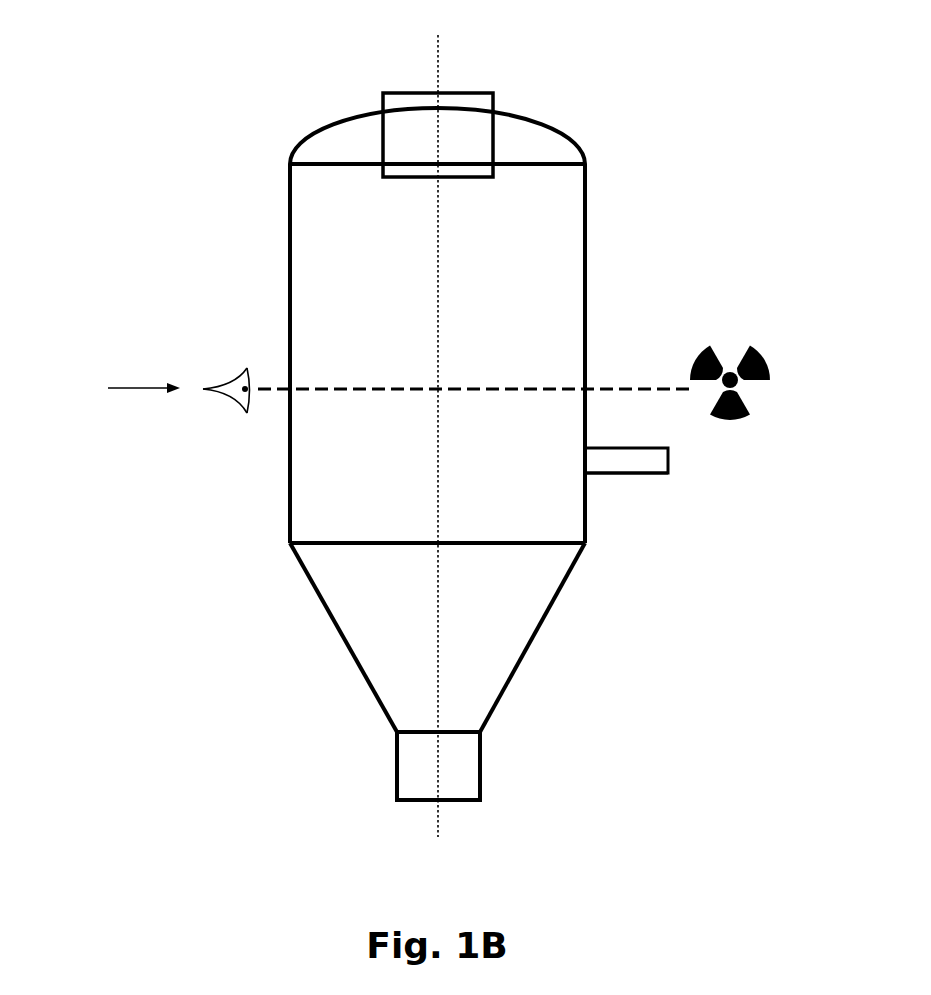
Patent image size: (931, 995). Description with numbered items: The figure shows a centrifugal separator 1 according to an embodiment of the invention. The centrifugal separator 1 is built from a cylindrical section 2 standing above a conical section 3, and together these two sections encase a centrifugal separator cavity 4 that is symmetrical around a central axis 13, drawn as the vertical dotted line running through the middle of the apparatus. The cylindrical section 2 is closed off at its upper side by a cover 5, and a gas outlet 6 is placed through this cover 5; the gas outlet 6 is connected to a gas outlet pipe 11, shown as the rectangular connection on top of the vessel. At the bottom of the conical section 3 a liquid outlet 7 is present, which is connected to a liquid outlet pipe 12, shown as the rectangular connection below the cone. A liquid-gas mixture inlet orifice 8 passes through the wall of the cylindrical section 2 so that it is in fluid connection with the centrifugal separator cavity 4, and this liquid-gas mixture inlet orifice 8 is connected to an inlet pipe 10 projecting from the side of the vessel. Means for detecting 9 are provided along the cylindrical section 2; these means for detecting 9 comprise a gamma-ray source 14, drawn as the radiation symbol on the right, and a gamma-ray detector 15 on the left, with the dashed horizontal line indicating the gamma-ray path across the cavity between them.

The centrifugal separator 1 is at (234, 144).
The cylindrical section 2 is at (290, 328).
The conical section 3 is at (318, 597).
The centrifugal separator cavity 4 is at (553, 270).
The cover 5 is at (342, 110).
The gas outlet 6 is at (397, 177).
The liquid outlet 7 is at (455, 733).
The liquid-gas mixture inlet orifice 8 is at (585, 473).
The means for detecting 9 is at (126, 394).
The inlet pipe 10 is at (660, 448).
The gas outlet pipe 11 is at (493, 100).
The liquid outlet pipe 12 is at (397, 783).
The central axis 13 is at (438, 822).
The gamma-ray source 14 is at (750, 410).
The gamma-ray detector 15 is at (245, 407).